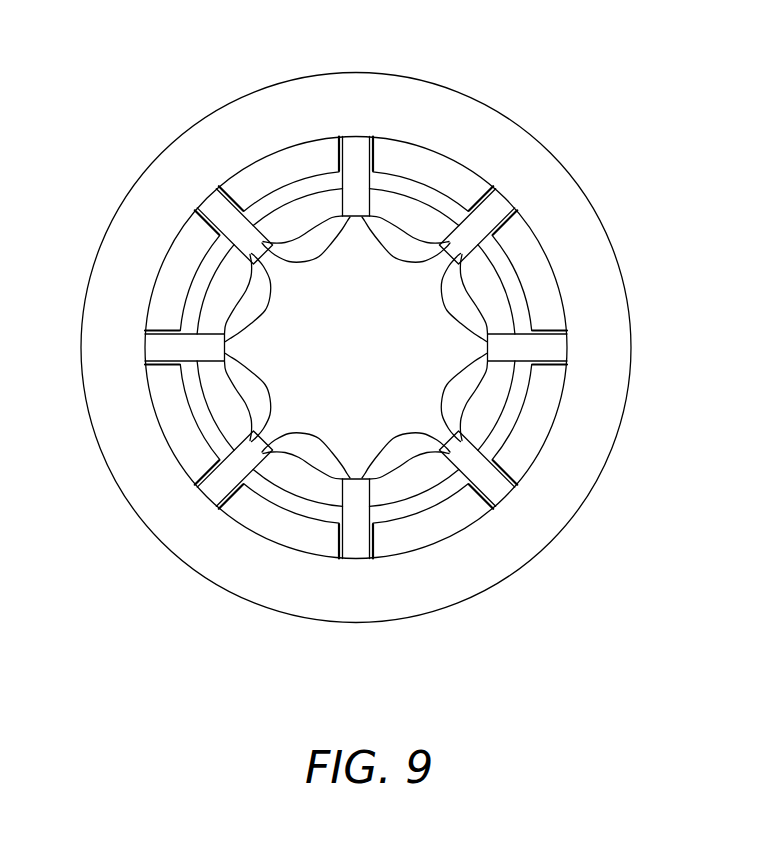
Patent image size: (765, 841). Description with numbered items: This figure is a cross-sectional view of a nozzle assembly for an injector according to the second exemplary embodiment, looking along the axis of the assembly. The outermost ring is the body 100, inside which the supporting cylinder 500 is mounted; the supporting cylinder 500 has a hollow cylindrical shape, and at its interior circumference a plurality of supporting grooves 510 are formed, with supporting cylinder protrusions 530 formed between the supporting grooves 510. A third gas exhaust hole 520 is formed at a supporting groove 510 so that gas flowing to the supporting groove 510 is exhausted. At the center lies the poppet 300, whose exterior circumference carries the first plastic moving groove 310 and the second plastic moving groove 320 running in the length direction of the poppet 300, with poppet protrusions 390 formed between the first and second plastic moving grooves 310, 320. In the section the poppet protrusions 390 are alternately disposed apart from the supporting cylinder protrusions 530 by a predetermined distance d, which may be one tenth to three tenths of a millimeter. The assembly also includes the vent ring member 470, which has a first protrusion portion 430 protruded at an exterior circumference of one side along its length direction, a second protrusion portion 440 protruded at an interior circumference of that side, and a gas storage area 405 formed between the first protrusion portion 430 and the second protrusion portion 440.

The body 100 is at (314, 75).
The poppet 300 is at (249, 374).
The first plastic moving groove 310 is at (300, 256).
The second plastic moving groove 320 is at (257, 303).
The poppet protrusion 390 is at (483, 332).
The gas storage area 405 is at (267, 497).
The first protrusion portion 430 is at (285, 528).
The second protrusion portion 440 is at (318, 488).
The vent ring member 470 is at (178, 481).
The supporting cylinder 500 is at (502, 203).
The supporting groove 510 is at (433, 150).
The third gas exhaust hole 520 is at (373, 133).
The supporting cylinder protrusion 530 is at (488, 352).
The predetermined distance d is at (357, 197).